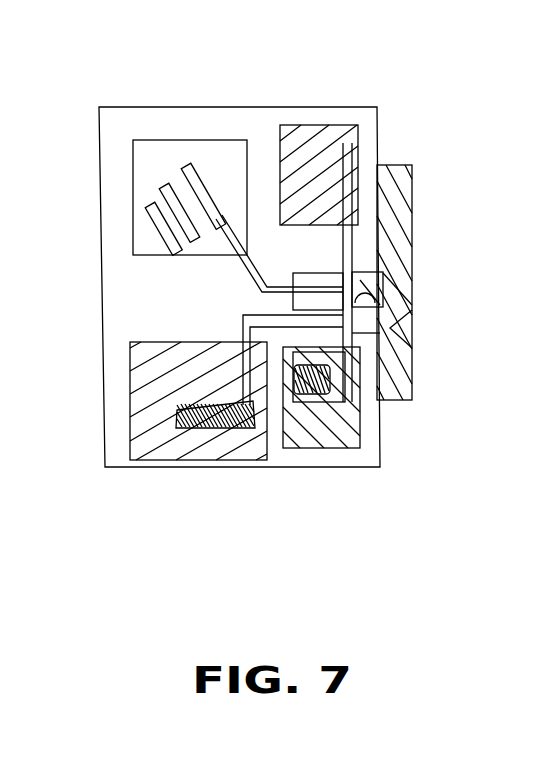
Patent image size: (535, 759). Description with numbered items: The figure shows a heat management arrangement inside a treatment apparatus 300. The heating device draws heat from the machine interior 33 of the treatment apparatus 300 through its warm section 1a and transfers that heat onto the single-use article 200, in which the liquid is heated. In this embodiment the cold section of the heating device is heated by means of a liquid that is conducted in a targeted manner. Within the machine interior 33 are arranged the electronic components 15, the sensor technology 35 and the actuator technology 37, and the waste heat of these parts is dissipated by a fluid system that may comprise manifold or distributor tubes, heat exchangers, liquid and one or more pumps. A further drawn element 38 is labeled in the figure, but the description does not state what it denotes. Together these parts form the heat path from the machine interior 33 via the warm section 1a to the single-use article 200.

The machine interior 33 is at (130, 285).
The treatment apparatus 300 is at (305, 468).
The sensor technology 35 is at (315, 150).
The single-use article 200 is at (513, 248).
The warm section 1a is at (380, 337).
The conductor lead 38 is at (238, 257).
The electronic components 15 is at (135, 415).
The actuator technology 37 is at (348, 422).